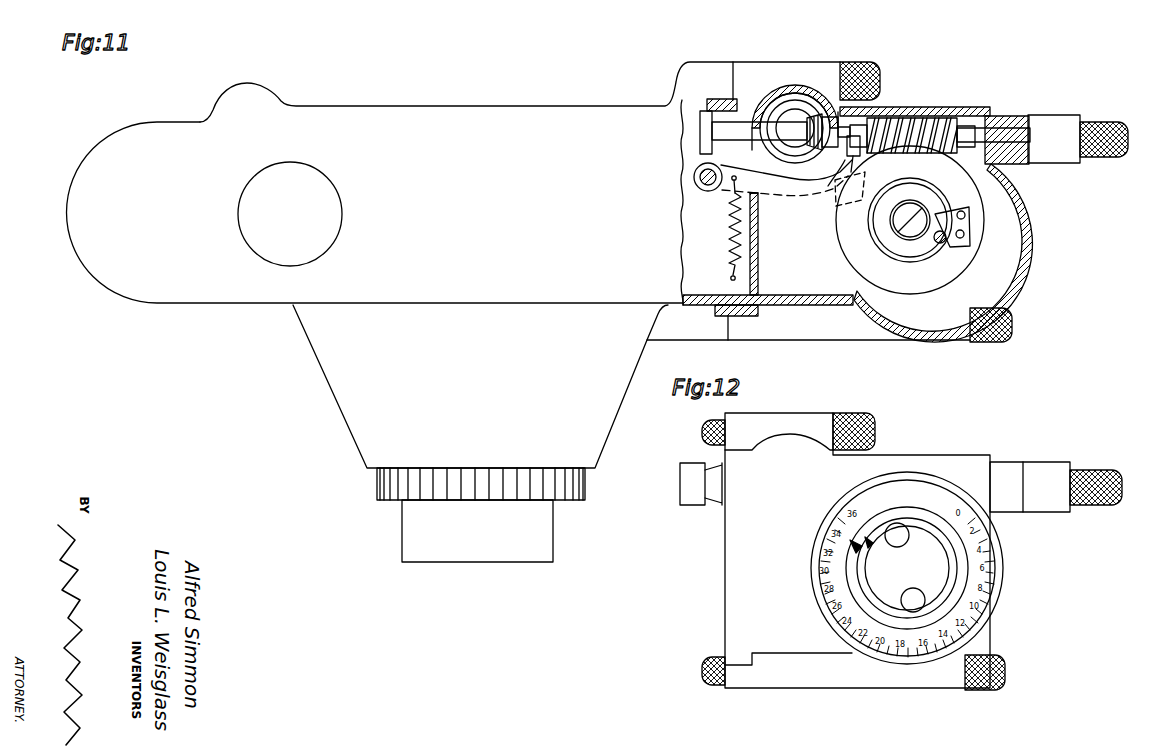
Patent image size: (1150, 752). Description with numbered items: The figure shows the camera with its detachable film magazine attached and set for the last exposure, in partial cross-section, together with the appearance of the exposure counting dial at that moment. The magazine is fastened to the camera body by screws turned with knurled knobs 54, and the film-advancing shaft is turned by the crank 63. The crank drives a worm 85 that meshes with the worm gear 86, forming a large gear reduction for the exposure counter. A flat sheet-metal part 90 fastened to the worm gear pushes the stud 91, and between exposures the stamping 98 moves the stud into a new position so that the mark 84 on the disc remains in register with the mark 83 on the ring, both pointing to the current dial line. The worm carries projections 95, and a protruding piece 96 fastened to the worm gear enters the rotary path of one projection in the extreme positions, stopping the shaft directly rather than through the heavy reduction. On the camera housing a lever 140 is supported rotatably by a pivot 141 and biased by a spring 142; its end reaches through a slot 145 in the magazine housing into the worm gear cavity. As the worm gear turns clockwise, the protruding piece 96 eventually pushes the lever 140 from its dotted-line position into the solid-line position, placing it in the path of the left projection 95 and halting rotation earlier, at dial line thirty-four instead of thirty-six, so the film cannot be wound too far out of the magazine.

In FIG. 11, the knurled knob 54 is at (873, 47).
In FIG. 11, the crank 63 is at (1098, 127).
In FIG. 11, the worm 85 is at (912, 122).
In FIG. 11, the worm gear 86 is at (980, 193).
In FIG. 11, the part 90 is at (963, 225).
In FIG. 11, the stud 91 is at (941, 245).
In FIG. 11, the projections 95 is at (855, 138).
In FIG. 11, the protruding piece 96 is at (832, 176).
In FIG. 11, the lever 140 is at (763, 180).
In FIG. 11, the pivot 141 is at (694, 178).
In FIG. 11, the spring 142 is at (730, 232).
In FIG. 11, the slot 145 is at (757, 204).
In FIG. 12, the mark 83 is at (858, 540).
In FIG. 12, the mark 84 is at (862, 552).
In FIG. 12, the stamping 98 is at (914, 598).